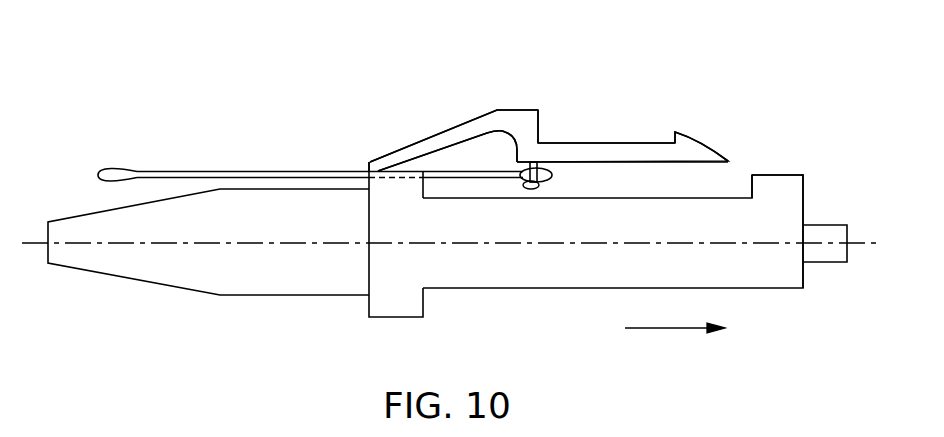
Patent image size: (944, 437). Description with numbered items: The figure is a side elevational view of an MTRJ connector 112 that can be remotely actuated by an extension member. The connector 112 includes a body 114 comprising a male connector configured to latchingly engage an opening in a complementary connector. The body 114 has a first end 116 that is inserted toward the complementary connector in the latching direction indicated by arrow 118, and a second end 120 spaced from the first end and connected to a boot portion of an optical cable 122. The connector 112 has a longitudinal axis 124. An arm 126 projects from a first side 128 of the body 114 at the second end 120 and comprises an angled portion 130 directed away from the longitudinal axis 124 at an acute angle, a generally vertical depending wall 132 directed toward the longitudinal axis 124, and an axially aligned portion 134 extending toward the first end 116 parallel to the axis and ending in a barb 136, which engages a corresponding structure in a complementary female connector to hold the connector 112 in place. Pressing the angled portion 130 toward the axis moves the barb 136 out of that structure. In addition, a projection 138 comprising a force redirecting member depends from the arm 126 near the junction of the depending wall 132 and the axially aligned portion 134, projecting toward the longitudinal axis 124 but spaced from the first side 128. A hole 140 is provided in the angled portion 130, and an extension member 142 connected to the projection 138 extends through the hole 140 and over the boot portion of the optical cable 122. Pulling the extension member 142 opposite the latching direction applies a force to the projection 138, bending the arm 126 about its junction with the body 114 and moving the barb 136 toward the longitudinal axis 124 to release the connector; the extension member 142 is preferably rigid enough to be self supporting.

The connector 112 is at (243, 314).
The body 114 is at (482, 280).
The first end 116 is at (780, 278).
The arrow 118 is at (670, 330).
The second end 120 is at (367, 305).
The optical cable 122 is at (162, 268).
The longitudinal axis 124 is at (867, 240).
The arm 126 is at (528, 90).
The first side 128 is at (733, 198).
The angled portion 130 is at (438, 143).
The depending wall 132 is at (527, 130).
The axially aligned portion 134 is at (618, 143).
The barb 136 is at (695, 150).
The projection 138 is at (552, 182).
The hole 140 is at (370, 158).
The extension member 142 is at (217, 173).